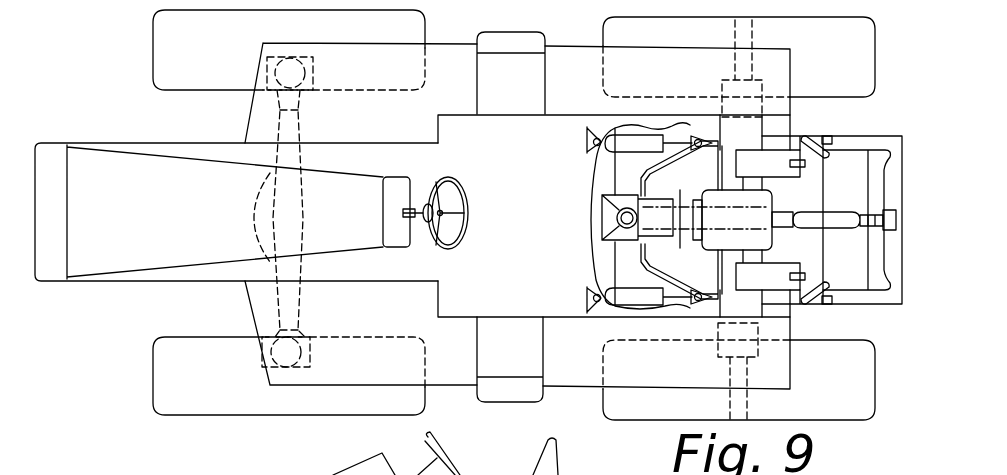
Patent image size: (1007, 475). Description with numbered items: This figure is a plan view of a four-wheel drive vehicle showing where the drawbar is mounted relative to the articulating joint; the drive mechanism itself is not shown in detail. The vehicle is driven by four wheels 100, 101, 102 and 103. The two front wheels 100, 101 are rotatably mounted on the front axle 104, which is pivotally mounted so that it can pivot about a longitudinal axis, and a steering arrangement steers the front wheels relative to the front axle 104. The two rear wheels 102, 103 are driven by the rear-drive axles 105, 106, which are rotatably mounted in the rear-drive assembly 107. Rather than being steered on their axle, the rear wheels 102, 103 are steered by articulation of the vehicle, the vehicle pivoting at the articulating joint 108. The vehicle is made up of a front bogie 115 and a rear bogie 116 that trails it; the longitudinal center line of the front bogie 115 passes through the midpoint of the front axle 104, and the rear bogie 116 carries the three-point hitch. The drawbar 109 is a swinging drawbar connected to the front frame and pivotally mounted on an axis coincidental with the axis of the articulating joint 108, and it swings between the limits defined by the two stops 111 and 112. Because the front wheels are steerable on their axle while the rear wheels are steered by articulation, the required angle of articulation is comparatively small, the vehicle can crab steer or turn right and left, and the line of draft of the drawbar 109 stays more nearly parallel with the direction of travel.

The front wheel 100 is at (150, 32).
The front wheel 101 is at (152, 375).
The rear wheel 102 is at (660, 418).
The rear wheel 103 is at (612, 30).
The front axle 104 is at (283, 120).
The rear-drive axle 105 is at (752, 402).
The rear-drive axle 106 is at (735, 67).
The rear-drive assembly 107 is at (760, 128).
The articulating joint 108 is at (613, 227).
The drawbar 109 is at (838, 210).
The stop 111 is at (812, 179).
The stop 112 is at (808, 263).
The front bogie 115 is at (208, 293).
The rear bogie 116 is at (632, 181).